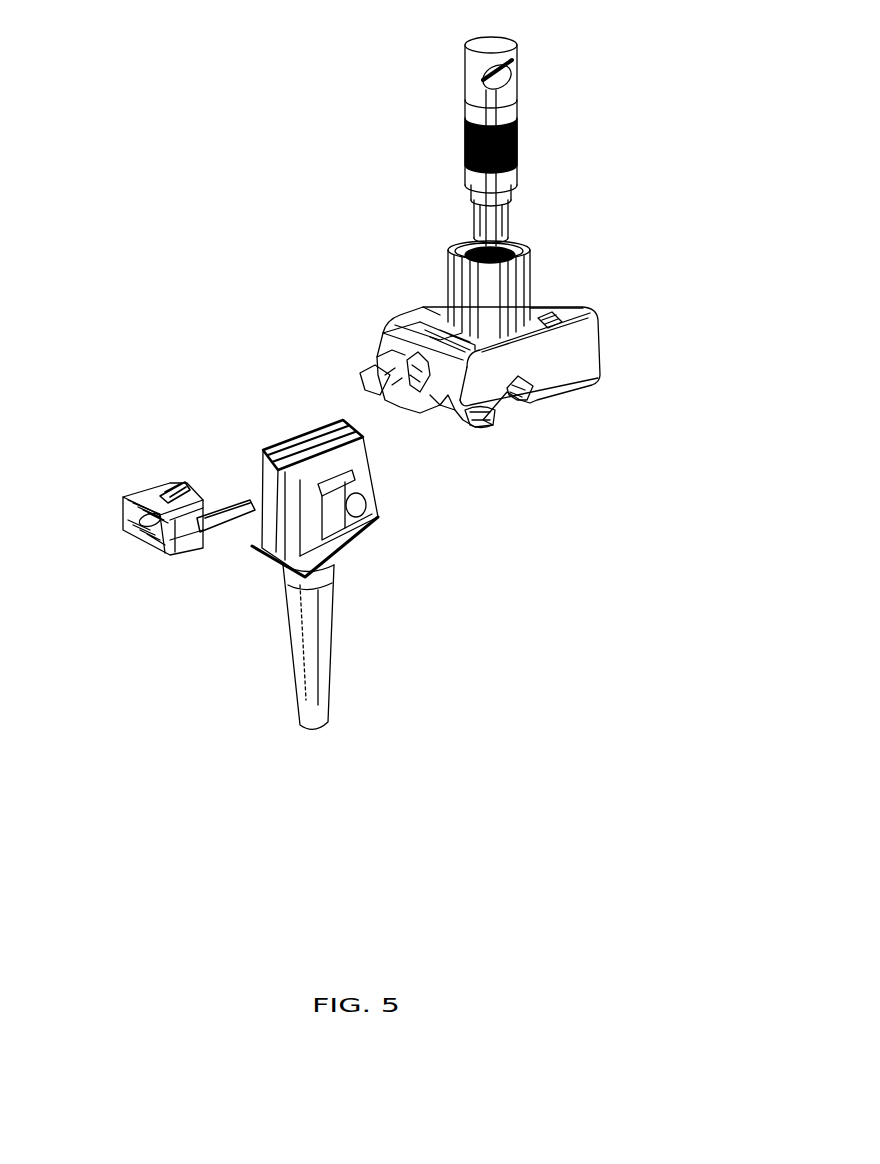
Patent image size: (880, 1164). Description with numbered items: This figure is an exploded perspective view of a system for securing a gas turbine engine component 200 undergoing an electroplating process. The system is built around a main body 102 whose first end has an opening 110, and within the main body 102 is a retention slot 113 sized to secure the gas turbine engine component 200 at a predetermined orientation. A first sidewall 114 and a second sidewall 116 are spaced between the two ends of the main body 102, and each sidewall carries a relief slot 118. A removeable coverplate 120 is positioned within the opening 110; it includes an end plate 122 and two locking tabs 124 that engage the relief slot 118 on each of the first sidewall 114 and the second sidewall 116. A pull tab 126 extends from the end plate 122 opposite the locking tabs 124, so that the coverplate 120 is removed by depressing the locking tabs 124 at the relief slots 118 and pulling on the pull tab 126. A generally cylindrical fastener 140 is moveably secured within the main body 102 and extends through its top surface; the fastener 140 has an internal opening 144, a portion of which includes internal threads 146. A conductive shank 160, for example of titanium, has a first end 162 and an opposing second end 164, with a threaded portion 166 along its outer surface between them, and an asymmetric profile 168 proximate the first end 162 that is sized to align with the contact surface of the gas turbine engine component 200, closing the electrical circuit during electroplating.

The main body 102 is at (601, 305).
The opening 110 is at (435, 433).
The retention slot 113 is at (415, 400).
The first sidewall 114 is at (536, 365).
The second sidewall 116 is at (415, 301).
The relief slot 118 is at (527, 407).
The removeable coverplate 120 is at (124, 518).
The end plate 122 is at (184, 544).
The locking tabs 124 is at (164, 492).
The pull tab 126 is at (144, 524).
The fastener 140 is at (545, 250).
The internal opening 144 is at (504, 252).
The internal threads 146 is at (478, 253).
The shank 160 is at (484, 46).
The first end 162 is at (480, 233).
The second end 164 is at (497, 77).
The threaded portion 166 is at (516, 135).
The asymmetric profile 168 is at (497, 216).
The gas turbine engine component 200 is at (307, 712).